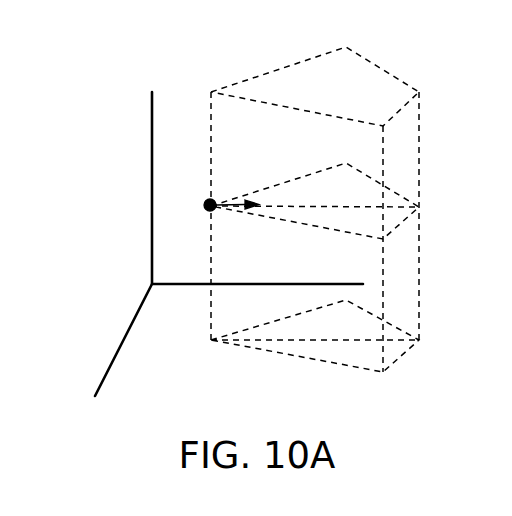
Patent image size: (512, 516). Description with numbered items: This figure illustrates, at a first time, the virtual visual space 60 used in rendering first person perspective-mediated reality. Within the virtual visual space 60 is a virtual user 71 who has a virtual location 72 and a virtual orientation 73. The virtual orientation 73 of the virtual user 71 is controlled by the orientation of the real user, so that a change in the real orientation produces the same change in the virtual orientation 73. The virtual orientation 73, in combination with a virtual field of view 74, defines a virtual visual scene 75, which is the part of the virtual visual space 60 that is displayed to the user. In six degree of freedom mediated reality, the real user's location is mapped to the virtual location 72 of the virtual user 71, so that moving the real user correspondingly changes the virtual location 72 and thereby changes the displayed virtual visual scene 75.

The virtual visual space 60 is at (341, 218).
The virtual user 71 is at (208, 197).
The virtual location 72 is at (221, 195).
The virtual orientation 73 is at (238, 212).
The virtual field of view 74 is at (268, 323).
The virtual visual scene 75 is at (287, 87).